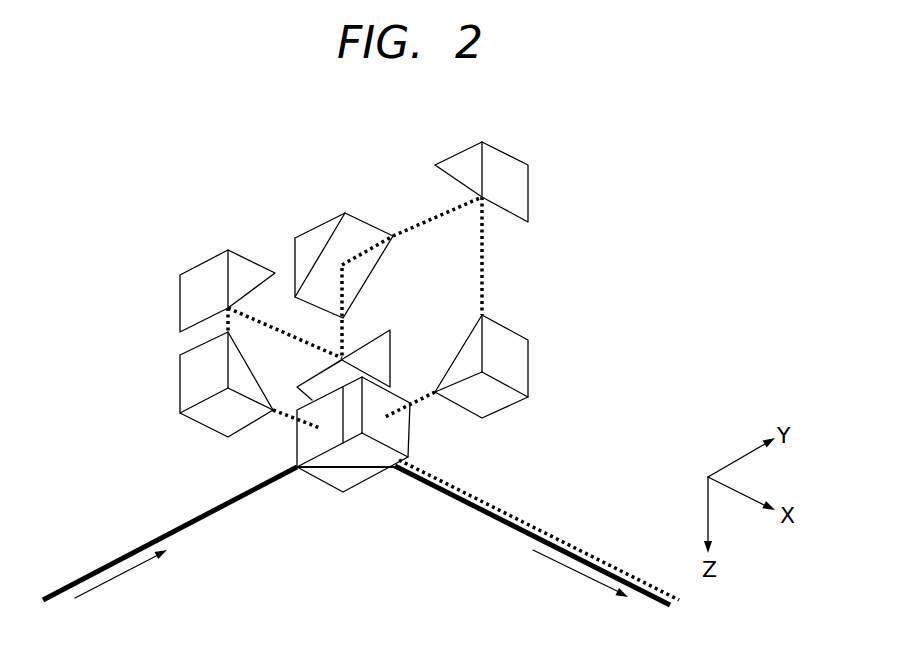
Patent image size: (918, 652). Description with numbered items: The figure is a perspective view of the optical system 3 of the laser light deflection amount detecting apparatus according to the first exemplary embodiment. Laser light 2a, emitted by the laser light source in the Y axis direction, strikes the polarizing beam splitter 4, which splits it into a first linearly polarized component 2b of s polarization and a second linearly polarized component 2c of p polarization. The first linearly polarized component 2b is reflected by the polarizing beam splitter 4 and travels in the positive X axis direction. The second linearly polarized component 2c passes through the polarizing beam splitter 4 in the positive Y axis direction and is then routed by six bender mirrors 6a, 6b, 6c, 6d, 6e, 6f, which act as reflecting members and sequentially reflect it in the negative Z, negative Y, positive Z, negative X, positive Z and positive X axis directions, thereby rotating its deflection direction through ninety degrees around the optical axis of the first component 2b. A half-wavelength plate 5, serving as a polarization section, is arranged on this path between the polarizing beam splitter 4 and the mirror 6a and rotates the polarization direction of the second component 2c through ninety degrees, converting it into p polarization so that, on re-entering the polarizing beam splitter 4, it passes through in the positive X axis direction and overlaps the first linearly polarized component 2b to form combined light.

The laser light 2a is at (158, 533).
The first linearly polarized component 2b is at (487, 517).
The second linearly polarized component 2c is at (484, 262).
The optical system 3 is at (235, 182).
The polarizing beam splitter 4 is at (330, 487).
The half-wavelength plate 5 is at (410, 437).
The mirror 6a is at (528, 362).
The mirror 6b is at (528, 189).
The mirror 6c is at (315, 228).
The mirror 6d is at (392, 343).
The mirror 6e is at (180, 297).
The mirror 6f is at (180, 378).